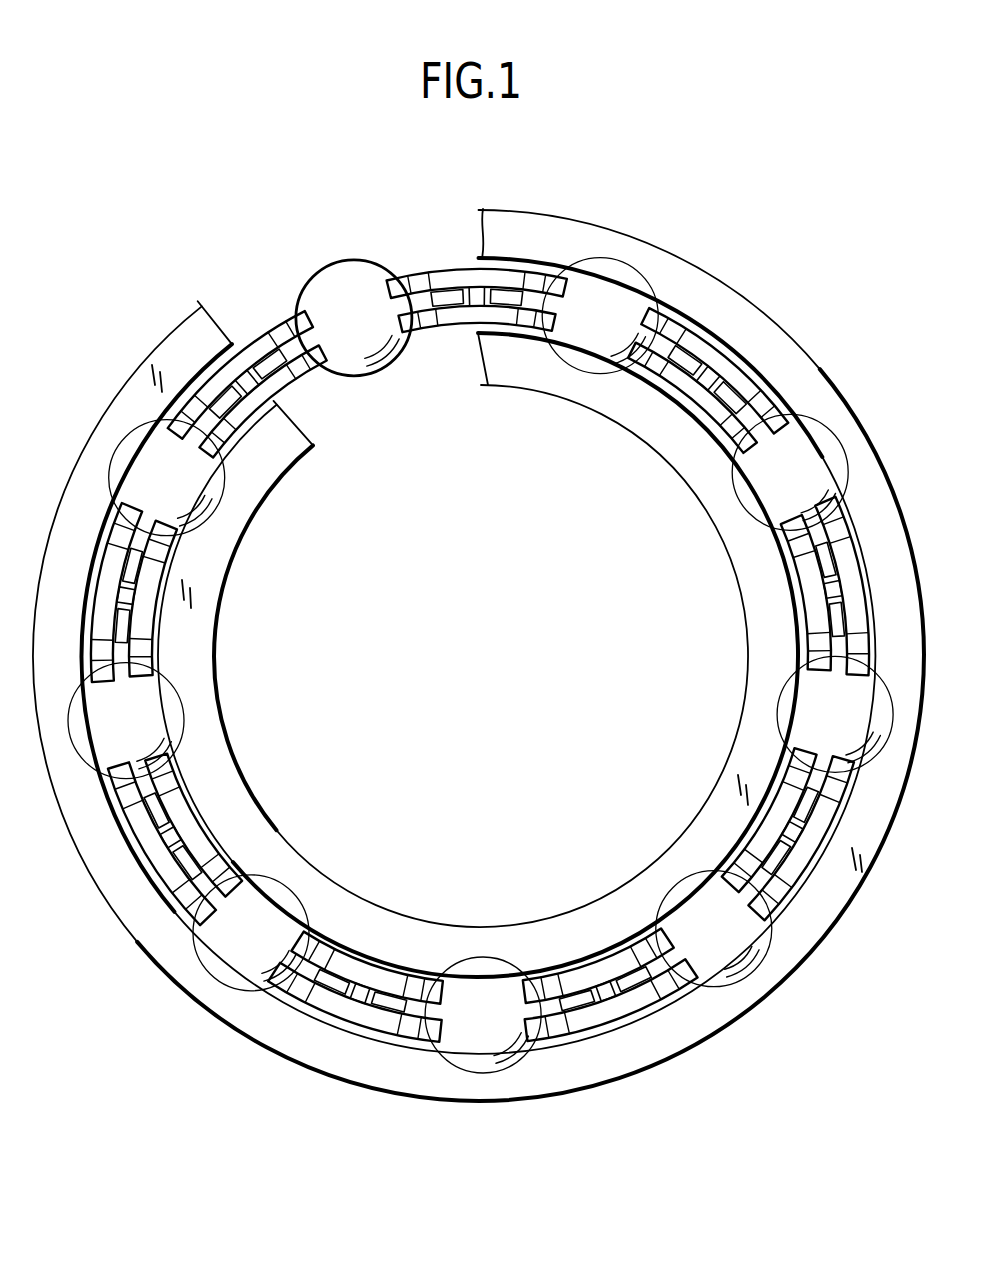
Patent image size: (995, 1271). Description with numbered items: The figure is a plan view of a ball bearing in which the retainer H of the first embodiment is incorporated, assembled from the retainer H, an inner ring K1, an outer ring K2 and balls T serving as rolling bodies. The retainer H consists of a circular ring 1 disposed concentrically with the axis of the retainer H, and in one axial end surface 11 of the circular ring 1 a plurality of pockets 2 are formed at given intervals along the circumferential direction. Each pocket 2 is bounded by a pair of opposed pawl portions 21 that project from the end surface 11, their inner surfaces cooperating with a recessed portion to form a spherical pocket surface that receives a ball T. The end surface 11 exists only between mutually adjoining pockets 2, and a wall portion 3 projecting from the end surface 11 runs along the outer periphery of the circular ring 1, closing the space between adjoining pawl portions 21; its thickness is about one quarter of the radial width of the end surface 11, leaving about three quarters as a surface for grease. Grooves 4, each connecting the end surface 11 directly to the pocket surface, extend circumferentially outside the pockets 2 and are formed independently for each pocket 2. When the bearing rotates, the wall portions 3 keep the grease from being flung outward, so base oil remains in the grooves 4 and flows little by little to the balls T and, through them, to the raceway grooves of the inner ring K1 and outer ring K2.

The circular ring 1 is at (247, 336).
The pocket 2 is at (312, 300).
The wall portion 3 is at (508, 272).
The groove 4 is at (313, 333).
The end surface 11 is at (470, 315).
The pawl portion 21 is at (416, 278).
The retainer H is at (458, 248).
The ball T is at (366, 262).
The inner ring K1 is at (205, 615).
The outer ring K2 is at (712, 305).